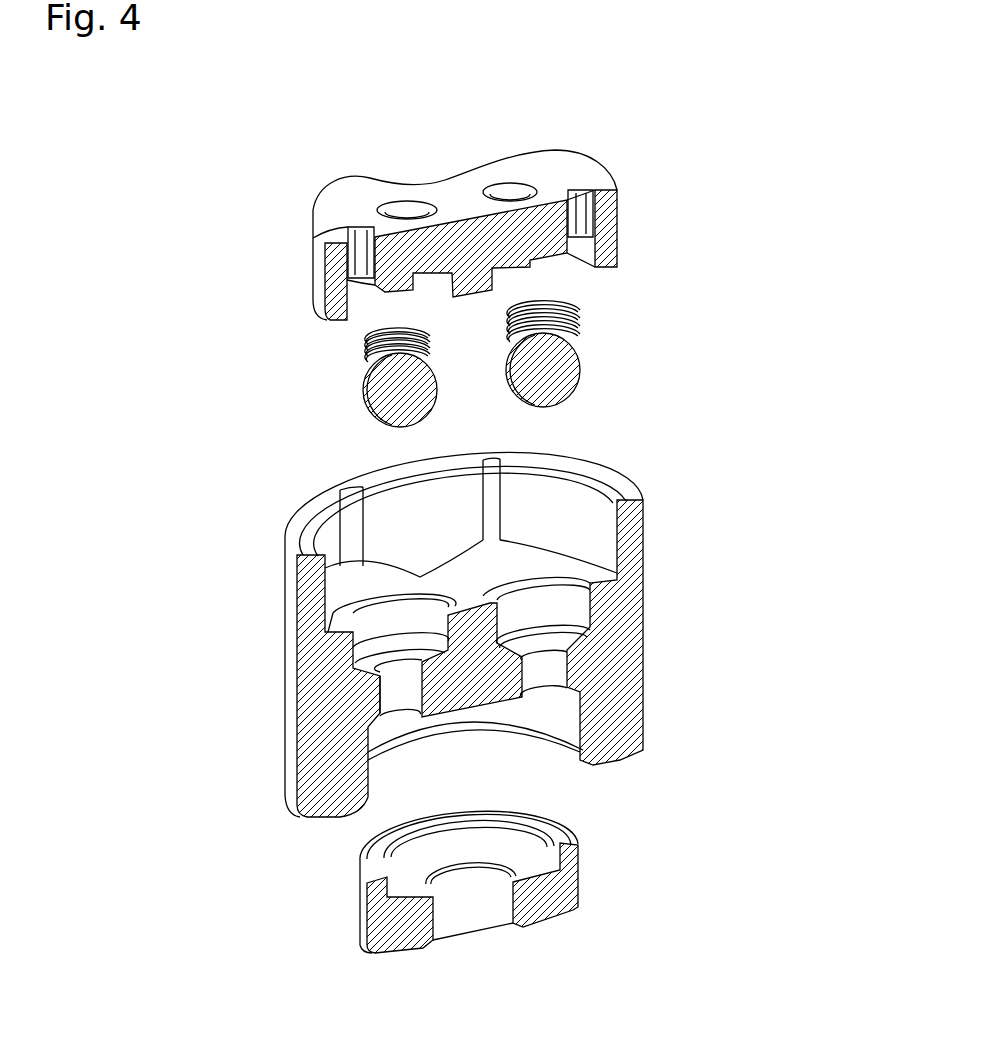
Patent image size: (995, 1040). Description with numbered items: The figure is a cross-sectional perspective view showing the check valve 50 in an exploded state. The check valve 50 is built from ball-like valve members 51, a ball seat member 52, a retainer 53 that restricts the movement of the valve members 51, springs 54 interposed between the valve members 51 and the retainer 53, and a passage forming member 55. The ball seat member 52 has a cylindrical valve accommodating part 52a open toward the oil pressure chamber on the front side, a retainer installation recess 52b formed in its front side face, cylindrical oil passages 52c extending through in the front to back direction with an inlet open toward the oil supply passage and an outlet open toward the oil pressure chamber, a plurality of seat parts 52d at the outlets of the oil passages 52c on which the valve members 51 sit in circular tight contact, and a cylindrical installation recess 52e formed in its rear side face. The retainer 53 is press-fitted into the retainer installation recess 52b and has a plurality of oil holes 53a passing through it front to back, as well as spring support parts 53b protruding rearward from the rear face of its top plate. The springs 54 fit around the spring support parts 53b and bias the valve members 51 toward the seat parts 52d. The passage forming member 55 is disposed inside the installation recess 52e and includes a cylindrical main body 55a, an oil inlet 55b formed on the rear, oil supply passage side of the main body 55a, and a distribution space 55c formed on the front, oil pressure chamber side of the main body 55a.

The check valve 50 is at (230, 158).
The valve members 51 is at (405, 393).
The ball seat member 52 is at (612, 677).
The valve accommodating part 52a is at (385, 625).
The retainer installation recess 52b is at (575, 512).
The oil passages 52c is at (377, 729).
The seat parts 52d is at (400, 698).
The installation recess 52e is at (550, 718).
The retainer 53 is at (548, 170).
The oil holes 53a is at (493, 190).
The spring support parts 53b is at (315, 293).
The springs 54 is at (365, 340).
The passage forming member 55 is at (522, 925).
The main body 55a is at (515, 882).
The oil inlet 55b is at (458, 897).
The distribution space 55c is at (420, 853).